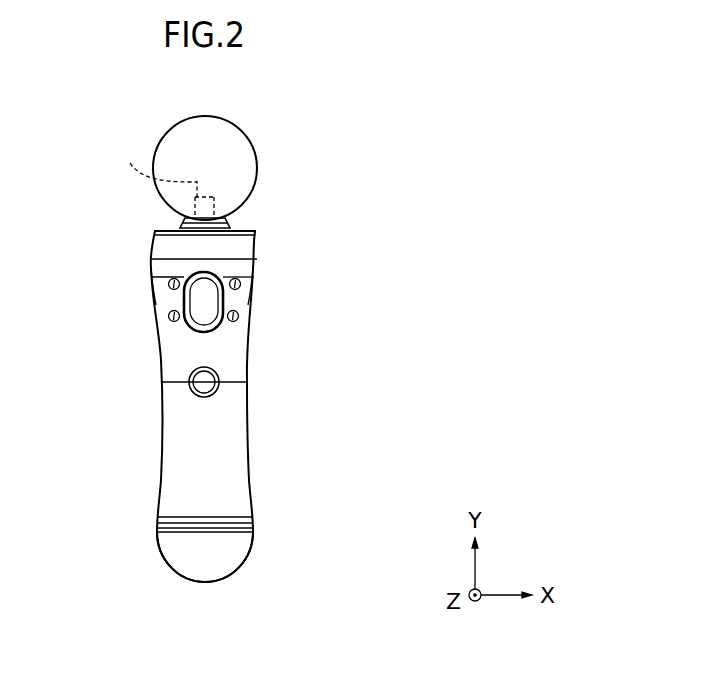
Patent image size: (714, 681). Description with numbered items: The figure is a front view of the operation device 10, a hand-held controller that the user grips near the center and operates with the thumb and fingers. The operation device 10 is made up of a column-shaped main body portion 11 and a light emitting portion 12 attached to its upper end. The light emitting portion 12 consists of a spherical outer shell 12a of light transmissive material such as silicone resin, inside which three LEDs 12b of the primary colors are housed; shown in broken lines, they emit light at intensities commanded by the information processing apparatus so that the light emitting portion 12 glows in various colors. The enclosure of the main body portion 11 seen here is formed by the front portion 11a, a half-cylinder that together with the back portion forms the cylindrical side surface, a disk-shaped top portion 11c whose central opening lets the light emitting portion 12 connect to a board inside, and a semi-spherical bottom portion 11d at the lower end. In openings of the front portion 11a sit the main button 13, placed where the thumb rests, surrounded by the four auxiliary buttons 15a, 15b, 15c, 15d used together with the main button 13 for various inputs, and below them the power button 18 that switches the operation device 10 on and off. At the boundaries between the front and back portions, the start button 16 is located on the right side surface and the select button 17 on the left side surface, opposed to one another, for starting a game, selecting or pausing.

The operation device 10 is at (204, 378).
The main body portion 11 is at (204, 409).
The front portion 11a is at (240, 433).
The top portion 11c is at (252, 228).
The bottom portion 11d is at (232, 558).
The light emitting portion 12 is at (225, 172).
The spherical outer shell 12a is at (257, 165).
The LEDs 12b is at (163, 178).
The main button 13 is at (212, 298).
The auxiliary button 15a is at (241, 278).
The auxiliary button 15b is at (168, 280).
The auxiliary button 15c is at (237, 322).
The auxiliary button 15d is at (177, 315).
The start button 16 is at (265, 292).
The select button 17 is at (147, 294).
The power button 18 is at (218, 373).